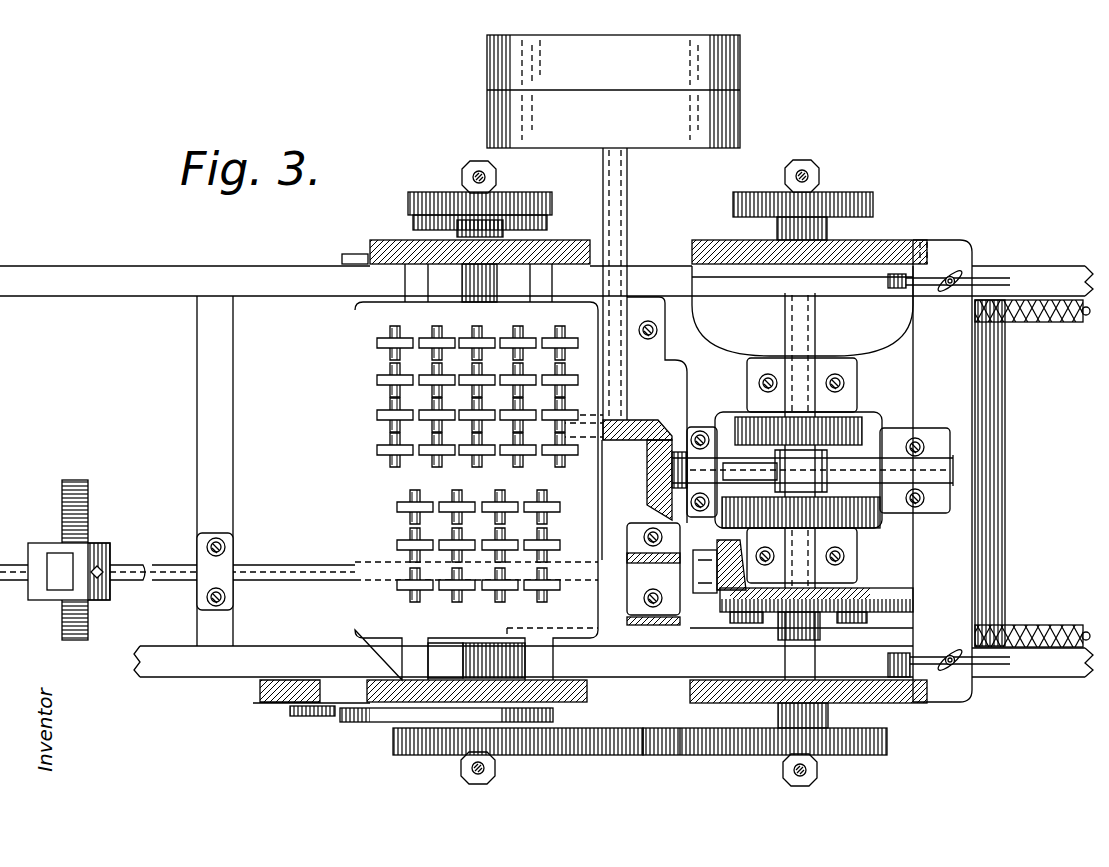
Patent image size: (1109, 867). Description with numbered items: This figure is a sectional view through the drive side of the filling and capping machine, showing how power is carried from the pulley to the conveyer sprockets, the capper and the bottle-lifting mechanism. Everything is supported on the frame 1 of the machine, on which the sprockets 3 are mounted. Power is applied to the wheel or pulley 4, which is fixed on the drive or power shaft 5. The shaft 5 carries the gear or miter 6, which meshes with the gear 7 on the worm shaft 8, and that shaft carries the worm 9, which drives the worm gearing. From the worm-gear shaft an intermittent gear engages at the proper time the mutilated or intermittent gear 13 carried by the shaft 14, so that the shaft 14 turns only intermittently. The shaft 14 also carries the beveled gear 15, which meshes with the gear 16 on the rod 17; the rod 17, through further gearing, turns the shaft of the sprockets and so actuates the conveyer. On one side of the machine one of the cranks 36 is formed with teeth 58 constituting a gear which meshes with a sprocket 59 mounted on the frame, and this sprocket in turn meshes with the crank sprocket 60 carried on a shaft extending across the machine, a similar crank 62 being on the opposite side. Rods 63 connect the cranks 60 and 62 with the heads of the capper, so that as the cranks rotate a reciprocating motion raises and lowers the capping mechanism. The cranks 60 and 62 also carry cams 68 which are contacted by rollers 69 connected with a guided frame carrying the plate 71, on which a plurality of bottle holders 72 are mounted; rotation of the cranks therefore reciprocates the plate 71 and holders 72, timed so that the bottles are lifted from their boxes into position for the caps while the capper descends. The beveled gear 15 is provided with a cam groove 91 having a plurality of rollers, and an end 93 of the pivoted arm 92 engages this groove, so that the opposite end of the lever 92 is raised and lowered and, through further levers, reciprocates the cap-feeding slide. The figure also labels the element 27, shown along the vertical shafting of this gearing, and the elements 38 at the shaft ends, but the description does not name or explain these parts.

The frame 1 is at (251, 283).
The sprocket 3 is at (1080, 316).
The wheel or pulley 4 is at (738, 126).
The drive or power shaft 5 is at (603, 193).
The gear or miter 6 is at (633, 420).
The gear 7 is at (648, 488).
The worm shaft 8 is at (724, 470).
The worm 9 is at (742, 466).
The mutilated or intermittent gear 13 is at (863, 412).
The shaft 14 is at (795, 514).
The beveled gear 15 is at (875, 597).
The gear 16 is at (718, 548).
The rod 17 is at (258, 576).
The vertical shaft 27 is at (835, 520).
The crank 36 is at (733, 205).
The nut 38 is at (790, 174).
The teeth 58 is at (888, 742).
The sprocket 59 is at (682, 755).
The crank sprocket 60 is at (393, 745).
The crank 62 is at (417, 198).
The rod 63 is at (477, 172).
The cam 68 is at (413, 220).
The roller 69 is at (468, 223).
The plate 71 is at (479, 491).
The bottle holder 72 is at (377, 380).
The cam groove 91 is at (882, 612).
The pivoted arm 92 is at (725, 633).
The end of pivoted arm 93 is at (818, 637).